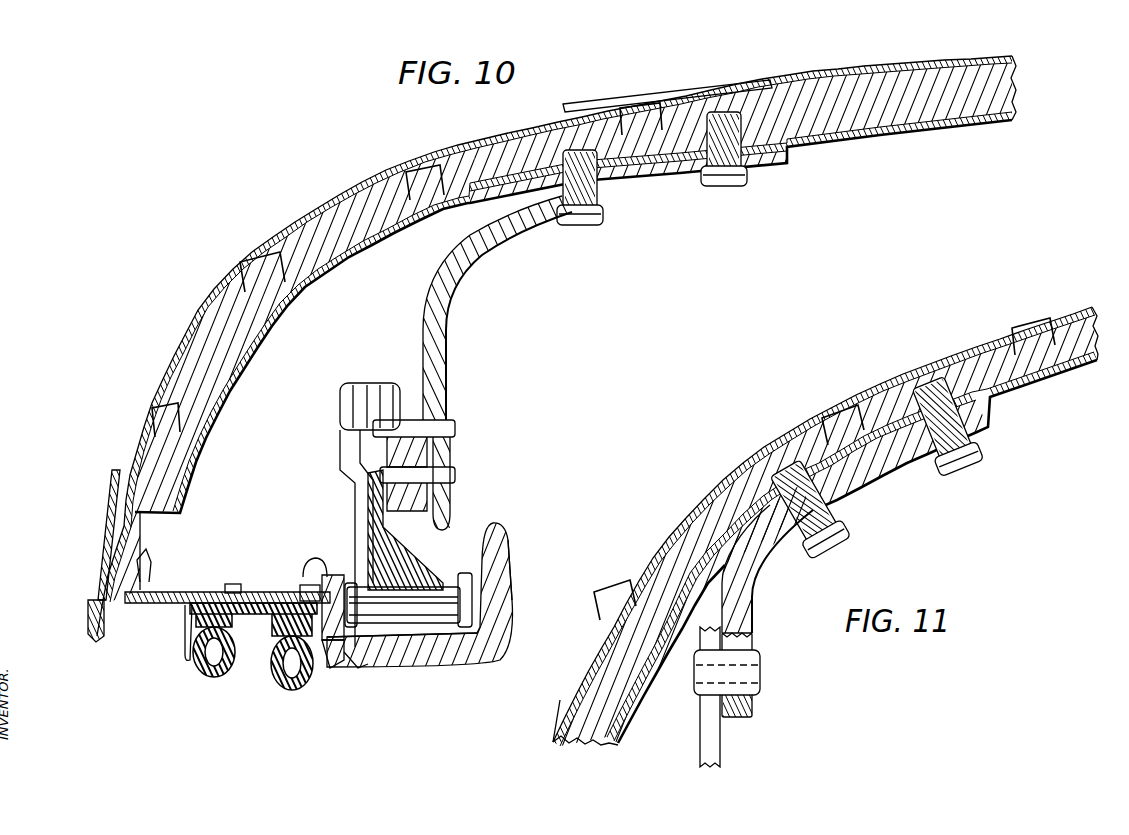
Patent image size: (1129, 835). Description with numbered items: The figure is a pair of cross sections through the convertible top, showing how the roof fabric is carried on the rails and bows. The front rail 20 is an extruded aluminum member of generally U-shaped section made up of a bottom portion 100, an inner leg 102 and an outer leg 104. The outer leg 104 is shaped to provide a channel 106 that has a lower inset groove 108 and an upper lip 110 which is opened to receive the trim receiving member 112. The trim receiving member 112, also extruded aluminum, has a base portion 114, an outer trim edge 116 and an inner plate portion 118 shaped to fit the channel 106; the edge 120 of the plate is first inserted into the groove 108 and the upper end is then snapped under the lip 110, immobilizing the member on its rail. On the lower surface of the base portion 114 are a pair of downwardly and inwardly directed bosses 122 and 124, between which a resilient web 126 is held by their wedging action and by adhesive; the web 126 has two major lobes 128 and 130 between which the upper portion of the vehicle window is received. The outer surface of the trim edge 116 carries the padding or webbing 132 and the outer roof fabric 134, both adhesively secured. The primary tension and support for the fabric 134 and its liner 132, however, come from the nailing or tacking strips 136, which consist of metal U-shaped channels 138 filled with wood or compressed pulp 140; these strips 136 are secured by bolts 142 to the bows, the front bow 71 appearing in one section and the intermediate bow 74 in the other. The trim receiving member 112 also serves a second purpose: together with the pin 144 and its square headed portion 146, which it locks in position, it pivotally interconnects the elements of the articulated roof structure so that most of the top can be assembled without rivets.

In FIG. 10, the wood or compressed pulp 140 is at (1010, 83).
In FIG. 11, the wood or compressed pulp 140 is at (1098, 332).
In FIG. 10, the metal U-shaped channels 138 is at (880, 143).
In FIG. 11, the metal U-shaped channels 138 is at (1083, 370).
In FIG. 10, the nailing or tacking strips 136 is at (360, 278).
In FIG. 11, the nailing or tacking strips 136 is at (1022, 400).
In FIG. 10, the outer roof fabric 134 is at (118, 490).
In FIG. 11, the outer roof fabric 134 is at (563, 726).
In FIG. 10, the padding or webbing 132 is at (133, 472).
In FIG. 11, the padding or webbing 132 is at (560, 748).
In FIG. 10, the bolts 142 is at (588, 222).
In FIG. 11, the bolts 142 is at (564, 417).
In FIG. 10, the front bow 71 is at (457, 288).
In FIG. 10, the square headed portion 146 is at (335, 560).
In FIG. 10, the outer leg 104 is at (318, 562).
In FIG. 10, the pin 144 is at (448, 598).
In FIG. 10, the front rail 20 is at (511, 572).
In FIG. 10, the inner leg 102 is at (513, 600).
In FIG. 10, the bottom portion 100 is at (418, 666).
In FIG. 10, the base portion 114 is at (220, 590).
In FIG. 10, the outer trim edge 116 is at (143, 556).
In FIG. 10, the boss 124 is at (232, 588).
In FIG. 10, the upper lip 110 is at (305, 572).
In FIG. 10, the channel 106 is at (306, 570).
In FIG. 10, the inner plate portion 118 is at (305, 594).
In FIG. 10, the lower inset groove 108 is at (332, 670).
In FIG. 10, the edge 120 is at (358, 670).
In FIG. 10, the trim receiving member 112 is at (160, 608).
In FIG. 10, the boss 122 is at (185, 632).
In FIG. 10, the major lobe 128 is at (203, 675).
In FIG. 10, the resilient web 126 is at (212, 690).
In FIG. 10, the major lobe 130 is at (295, 690).
In FIG. 11, the intermediate bow 74 is at (757, 578).